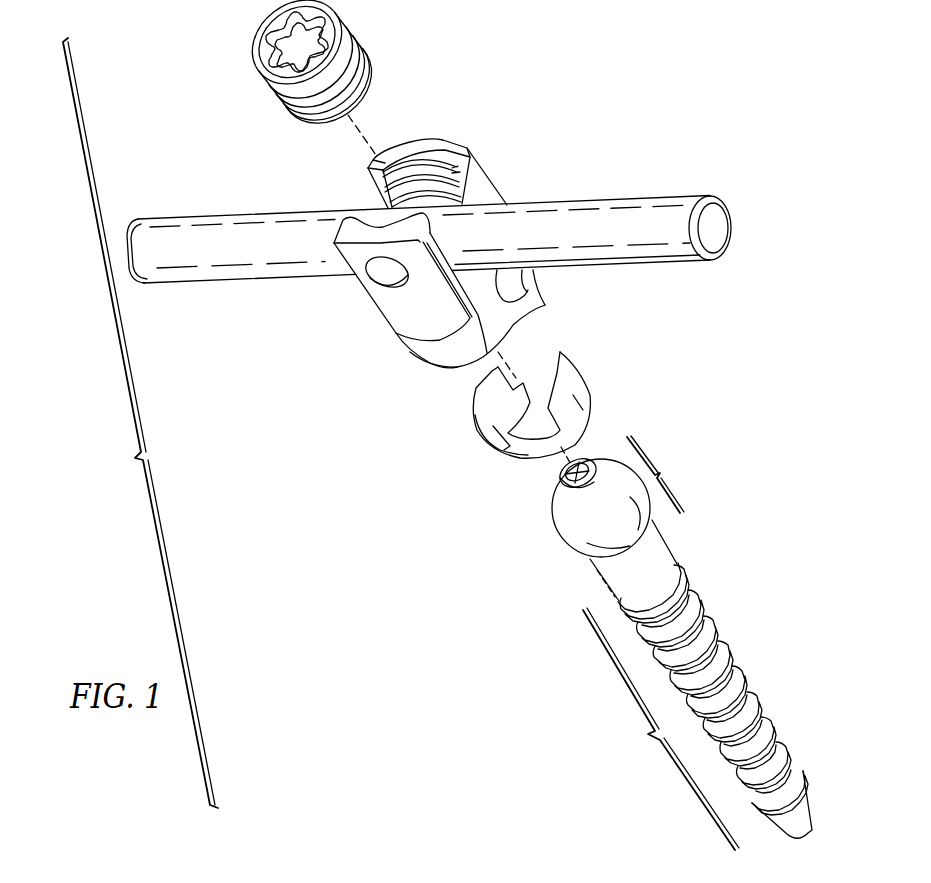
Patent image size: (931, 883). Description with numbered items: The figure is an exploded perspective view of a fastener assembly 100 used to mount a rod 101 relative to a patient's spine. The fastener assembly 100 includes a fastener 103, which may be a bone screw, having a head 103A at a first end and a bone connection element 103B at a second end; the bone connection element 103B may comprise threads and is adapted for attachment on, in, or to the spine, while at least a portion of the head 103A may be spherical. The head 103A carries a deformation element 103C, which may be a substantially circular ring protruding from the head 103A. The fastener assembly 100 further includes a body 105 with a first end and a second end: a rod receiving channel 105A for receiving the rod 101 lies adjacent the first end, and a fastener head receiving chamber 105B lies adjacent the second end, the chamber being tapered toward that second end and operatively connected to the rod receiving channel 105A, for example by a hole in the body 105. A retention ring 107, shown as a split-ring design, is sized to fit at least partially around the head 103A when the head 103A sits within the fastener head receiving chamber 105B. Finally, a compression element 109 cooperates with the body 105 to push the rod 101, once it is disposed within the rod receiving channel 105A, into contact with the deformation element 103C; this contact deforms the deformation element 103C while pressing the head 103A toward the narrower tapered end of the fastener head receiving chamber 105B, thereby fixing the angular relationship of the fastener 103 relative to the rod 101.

The fastener assembly 100 is at (140, 423).
The rod 101 is at (603, 199).
The fastener 103 is at (690, 592).
The head 103A is at (669, 474).
The bone connection element 103B is at (661, 729).
The deformation element 103C is at (553, 473).
The body 105 is at (383, 300).
The rod receiving channel 105A is at (512, 297).
The fastener head receiving chamber 105B is at (458, 368).
The retention ring 107 is at (587, 388).
The compression element 109 is at (250, 60).